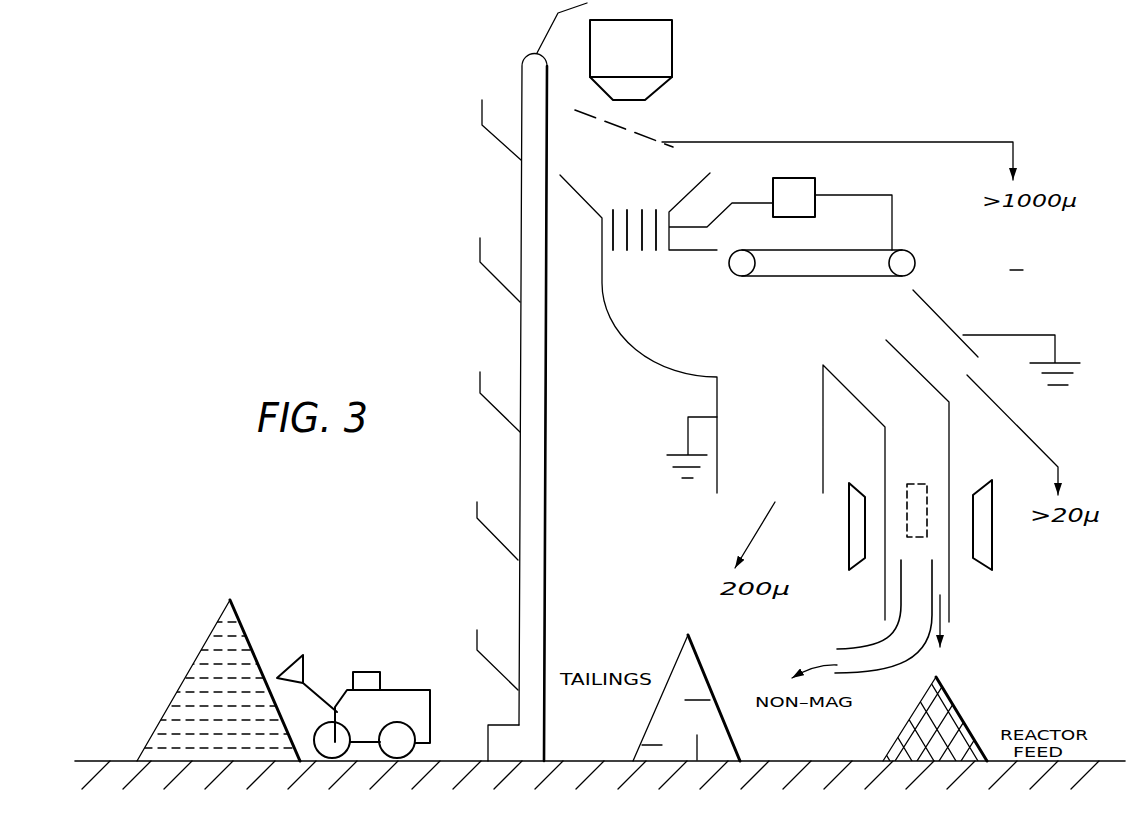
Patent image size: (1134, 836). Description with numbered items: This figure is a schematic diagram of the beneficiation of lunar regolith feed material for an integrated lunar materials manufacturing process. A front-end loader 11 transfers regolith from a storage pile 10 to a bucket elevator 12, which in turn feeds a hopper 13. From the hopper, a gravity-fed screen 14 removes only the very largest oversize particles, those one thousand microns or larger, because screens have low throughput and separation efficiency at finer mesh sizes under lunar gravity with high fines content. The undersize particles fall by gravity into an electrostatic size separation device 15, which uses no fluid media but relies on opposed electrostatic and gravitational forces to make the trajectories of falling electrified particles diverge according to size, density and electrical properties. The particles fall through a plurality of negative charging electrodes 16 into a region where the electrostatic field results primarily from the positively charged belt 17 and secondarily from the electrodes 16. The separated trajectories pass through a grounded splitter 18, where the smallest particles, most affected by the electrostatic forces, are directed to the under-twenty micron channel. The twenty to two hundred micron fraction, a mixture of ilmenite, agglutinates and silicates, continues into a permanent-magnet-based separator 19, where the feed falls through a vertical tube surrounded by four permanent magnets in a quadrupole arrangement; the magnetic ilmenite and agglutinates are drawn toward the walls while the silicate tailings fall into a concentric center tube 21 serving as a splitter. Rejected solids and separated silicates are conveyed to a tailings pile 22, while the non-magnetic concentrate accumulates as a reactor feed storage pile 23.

The storage pile 10 is at (220, 680).
The front-end loader 11 is at (378, 720).
The bucket elevator 12 is at (517, 500).
The hopper 13 is at (642, 58).
The screen 14 is at (637, 100).
The electrostatic size separation device 15 is at (617, 332).
The charging electrodes 16 is at (648, 188).
The positively charged belt 17 is at (818, 262).
The grounded splitter 18 is at (842, 392).
The permanent-magnet-based separator 19 is at (917, 483).
The concentric tube 21 is at (902, 617).
The tailings pile 22 is at (697, 729).
The storage pile 23 is at (947, 725).